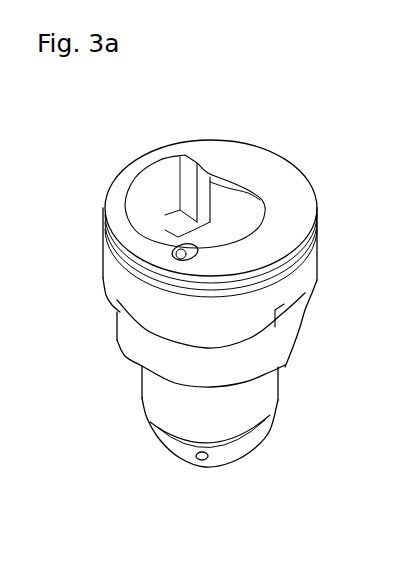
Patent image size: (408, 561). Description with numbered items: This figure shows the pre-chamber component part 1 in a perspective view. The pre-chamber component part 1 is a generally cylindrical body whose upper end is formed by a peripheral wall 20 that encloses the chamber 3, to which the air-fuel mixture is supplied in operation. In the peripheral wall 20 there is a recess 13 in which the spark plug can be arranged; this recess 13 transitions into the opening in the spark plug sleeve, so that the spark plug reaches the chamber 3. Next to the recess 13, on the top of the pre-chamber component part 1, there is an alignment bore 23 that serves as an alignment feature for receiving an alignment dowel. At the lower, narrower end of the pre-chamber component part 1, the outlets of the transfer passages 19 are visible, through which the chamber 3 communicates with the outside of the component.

The pre-chamber component part 1 is at (285, 94).
The chamber 3 is at (238, 217).
The recess 13 is at (148, 179).
The transfer passages 19 is at (205, 459).
The peripheral wall 20 is at (227, 177).
The alignment bore 23 is at (178, 255).